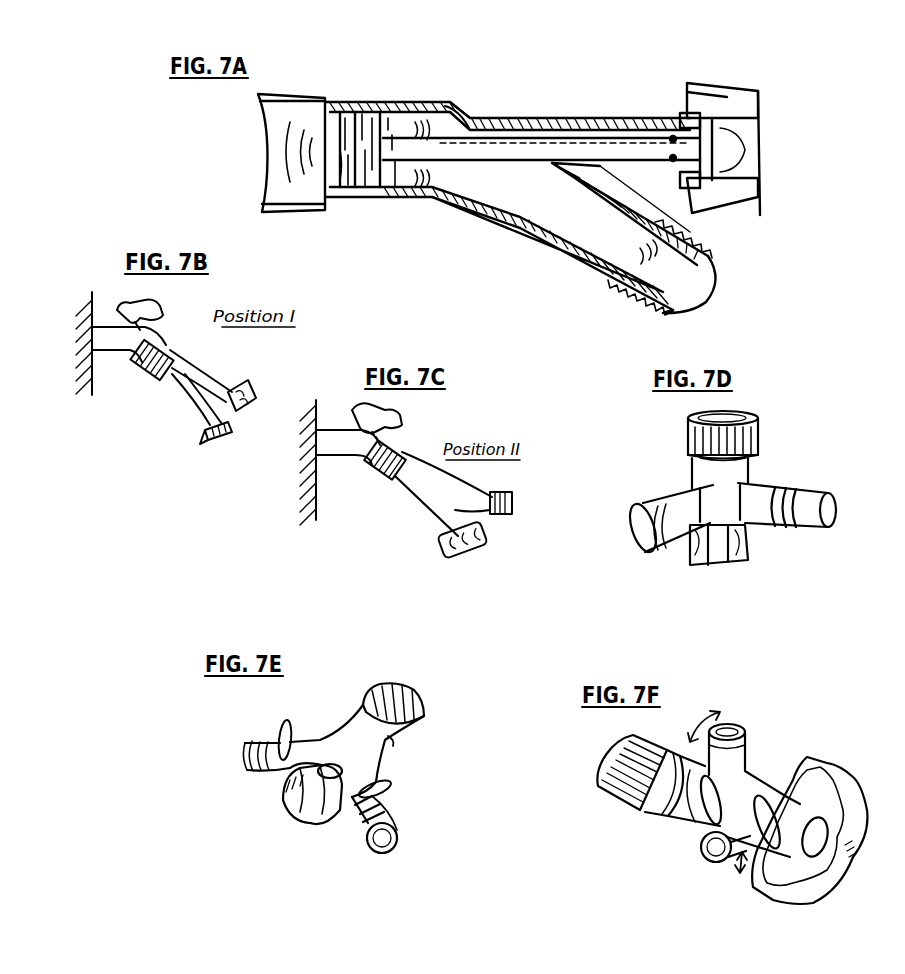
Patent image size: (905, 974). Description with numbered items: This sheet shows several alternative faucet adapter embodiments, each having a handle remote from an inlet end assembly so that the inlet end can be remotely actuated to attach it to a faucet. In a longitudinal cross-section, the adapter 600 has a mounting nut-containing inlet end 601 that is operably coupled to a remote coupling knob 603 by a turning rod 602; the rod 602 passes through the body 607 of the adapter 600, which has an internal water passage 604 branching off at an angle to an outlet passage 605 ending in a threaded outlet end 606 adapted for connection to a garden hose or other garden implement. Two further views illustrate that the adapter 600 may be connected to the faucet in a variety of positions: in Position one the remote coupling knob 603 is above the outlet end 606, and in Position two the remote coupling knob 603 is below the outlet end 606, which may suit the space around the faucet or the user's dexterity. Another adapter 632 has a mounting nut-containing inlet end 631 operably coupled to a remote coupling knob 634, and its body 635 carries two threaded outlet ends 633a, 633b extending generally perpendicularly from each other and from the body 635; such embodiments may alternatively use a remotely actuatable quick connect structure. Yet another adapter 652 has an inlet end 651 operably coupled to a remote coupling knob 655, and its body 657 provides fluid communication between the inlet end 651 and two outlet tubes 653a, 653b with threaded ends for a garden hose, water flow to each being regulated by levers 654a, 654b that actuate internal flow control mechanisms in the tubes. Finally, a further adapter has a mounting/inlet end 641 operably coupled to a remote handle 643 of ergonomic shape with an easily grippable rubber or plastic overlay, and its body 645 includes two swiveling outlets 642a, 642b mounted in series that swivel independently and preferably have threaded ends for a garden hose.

In FIG. 7A, the adapter 600 is at (598, 72).
In FIG. 7B, the adapter 600 is at (161, 420).
In FIG. 7C, the adapter 600 is at (390, 532).
In FIG. 7F, the adapter 600 is at (784, 734).
In FIG. 7A, the mounting nut-containing inlet end 601 is at (310, 112).
In FIG. 7B, the mounting nut-containing inlet end 601 is at (144, 376).
In FIG. 7C, the mounting nut-containing inlet end 601 is at (375, 482).
In FIG. 7A, the turning rod 602 is at (432, 136).
In FIG. 7A, the remote coupling knob 603 is at (747, 102).
In FIG. 7B, the remote coupling knob 603 is at (250, 390).
In FIG. 7C, the remote coupling knob 603 is at (470, 551).
In FIG. 7A, the internal water passage 604 is at (430, 172).
In FIG. 7A, the outlet passage 605 is at (598, 230).
In FIG. 7A, the threaded outlet end 606 is at (700, 313).
In FIG. 7B, the threaded outlet end 606 is at (210, 446).
In FIG. 7C, the threaded outlet end 606 is at (512, 500).
In FIG. 7A, the body 607 is at (432, 104).
In FIG. 7B, the body 607 is at (210, 386).
In FIG. 7C, the body 607 is at (424, 510).
In FIG. 7D, the mounting nut-containing inlet end 631 is at (745, 442).
In FIG. 7D, the adapter 632 is at (783, 477).
In FIG. 7D, the threaded outlet end 633a is at (668, 548).
In FIG. 7D, the threaded outlet end 633b is at (797, 524).
In FIG. 7D, the remote coupling knob 634 is at (720, 564).
In FIG. 7D, the body 635 is at (698, 468).
In FIG. 7F, the mounting/inlet end 641 is at (620, 792).
In FIG. 7F, the swiveling outlet 642a is at (700, 806).
In FIG. 7F, the swiveling outlet 642b is at (748, 790).
In FIG. 7F, the remote handle 643 is at (835, 890).
In FIG. 7F, the body 645 is at (668, 803).
In FIG. 7E, the inlet end 651 is at (424, 708).
In FIG. 7E, the adapter 652 is at (396, 774).
In FIG. 7E, the outlet tube 653a is at (290, 770).
In FIG. 7E, the outlet tube 653b is at (340, 806).
In FIG. 7E, the lever 654a is at (298, 738).
In FIG. 7E, the lever 654b is at (395, 798).
In FIG. 7E, the remote coupling knob 655 is at (305, 810).
In FIG. 7E, the body 657 is at (398, 746).